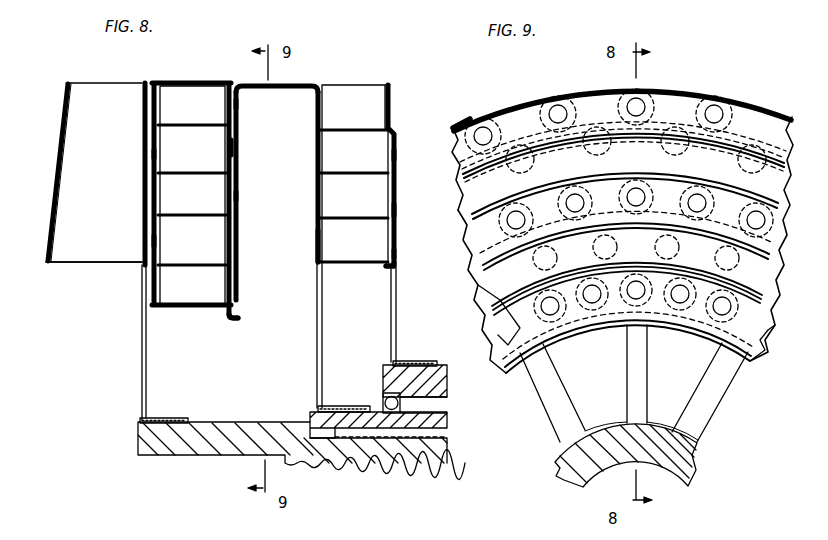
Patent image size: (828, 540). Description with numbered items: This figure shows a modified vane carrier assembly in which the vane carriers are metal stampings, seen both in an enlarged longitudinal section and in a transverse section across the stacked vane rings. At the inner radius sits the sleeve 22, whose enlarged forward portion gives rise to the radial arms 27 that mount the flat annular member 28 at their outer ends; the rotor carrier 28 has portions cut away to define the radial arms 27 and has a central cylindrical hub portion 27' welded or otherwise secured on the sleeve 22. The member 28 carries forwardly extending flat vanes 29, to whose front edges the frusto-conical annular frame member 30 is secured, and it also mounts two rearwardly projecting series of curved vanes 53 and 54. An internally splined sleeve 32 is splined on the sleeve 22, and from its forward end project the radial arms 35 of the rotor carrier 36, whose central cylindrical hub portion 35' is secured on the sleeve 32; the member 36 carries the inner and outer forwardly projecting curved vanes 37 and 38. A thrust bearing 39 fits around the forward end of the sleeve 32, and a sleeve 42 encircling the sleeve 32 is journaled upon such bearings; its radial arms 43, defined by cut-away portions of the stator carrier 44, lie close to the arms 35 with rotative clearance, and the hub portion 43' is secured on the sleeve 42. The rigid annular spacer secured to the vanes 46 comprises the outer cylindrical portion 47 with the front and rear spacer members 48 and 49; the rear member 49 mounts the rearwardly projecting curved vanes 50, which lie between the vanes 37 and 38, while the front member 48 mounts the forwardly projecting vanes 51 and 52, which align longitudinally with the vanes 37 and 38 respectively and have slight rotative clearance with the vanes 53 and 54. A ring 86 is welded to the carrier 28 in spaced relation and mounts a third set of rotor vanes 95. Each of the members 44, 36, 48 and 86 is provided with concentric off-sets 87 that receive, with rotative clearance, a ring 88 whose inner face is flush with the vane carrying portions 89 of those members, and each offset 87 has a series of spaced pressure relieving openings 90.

In FIG. 8, the sleeve 22 is at (448, 455).
In FIG. 9, the sleeve 22 is at (566, 470).
In FIG. 8, the radial arms 27 is at (125, 342).
In FIG. 9, the radial arms 27 is at (583, 383).
In FIG. 8, the central cylindrical hub portion 27' is at (164, 406).
In FIG. 9, the central cylindrical hub portion 27' is at (701, 392).
In FIG. 8, the flat annular member 28 is at (142, 206).
In FIG. 8, the vanes 29 is at (70, 260).
In FIG. 8, the frusto-conical annular frame member 30 is at (54, 214).
In FIG. 8, the internally splined sleeve 32 is at (448, 424).
In FIG. 8, the radial arms 35 is at (331, 335).
In FIG. 8, the central cylindrical hub portion 35' is at (344, 392).
In FIG. 8, the flat annular member 36 is at (316, 242).
In FIG. 8, the curved vanes 37 is at (342, 264).
In FIG. 8, the curved vanes 38 is at (349, 152).
In FIG. 8, the thrust bearing 39 is at (384, 401).
In FIG. 8, the sleeve 42 is at (440, 385).
In FIG. 8, the radial arms 43 is at (407, 315).
In FIG. 8, the central cylindrical hub portion 43' is at (415, 351).
In FIG. 8, the flat annular member 44 is at (398, 211).
In FIG. 8, the vanes 46 is at (362, 100).
In FIG. 8, the outer cylindrical portion 47 is at (290, 85).
In FIG. 9, the outer cylindrical portion 47 is at (505, 110).
In FIG. 8, the front spacer member 48 is at (233, 147).
In FIG. 9, the front spacer member 48 is at (478, 203).
In FIG. 8, the rear spacer member 49 is at (315, 119).
In FIG. 8, the curved vanes 50 is at (374, 216).
In FIG. 8, the curved vanes 51 is at (209, 244).
In FIG. 9, the curved vanes 51 is at (700, 250).
In FIG. 8, the curved vanes 52 is at (212, 163).
In FIG. 9, the curved vanes 52 is at (720, 157).
In FIG. 8, the curved vanes 53 is at (190, 100).
In FIG. 9, the curved vanes 53 is at (670, 125).
In FIG. 8, the curved vanes 54 is at (187, 194).
In FIG. 9, the curved vanes 54 is at (748, 162).
In FIG. 8, the ring 86 is at (156, 304).
In FIG. 8, the concentric off-sets 87 is at (233, 130).
In FIG. 9, the concentric off-sets 87 is at (735, 350).
In FIG. 8, the ring 88 is at (229, 104).
In FIG. 9, the ring 88 is at (500, 292).
In FIG. 8, the vane carrying portions 89 is at (160, 96).
In FIG. 9, the vane carrying portions 89 is at (764, 282).
In FIG. 8, the pressure relieving openings 90 is at (152, 154).
In FIG. 9, the pressure relieving openings 90 is at (634, 196).
In FIG. 8, the rotor vanes 95 is at (188, 300).
In FIG. 9, the rotor vanes 95 is at (582, 312).